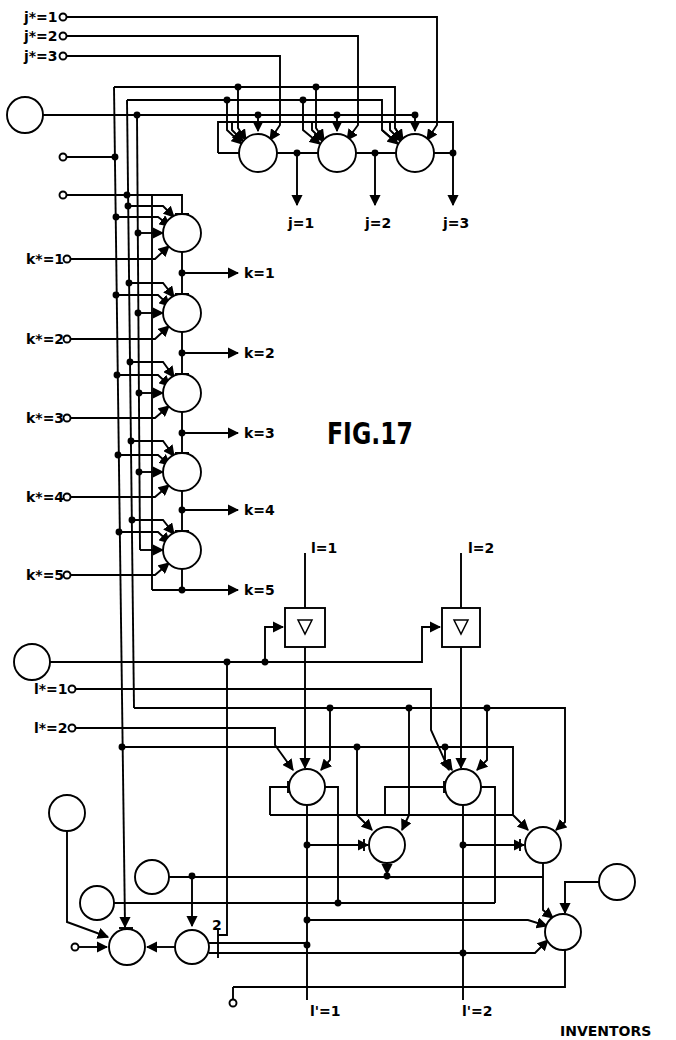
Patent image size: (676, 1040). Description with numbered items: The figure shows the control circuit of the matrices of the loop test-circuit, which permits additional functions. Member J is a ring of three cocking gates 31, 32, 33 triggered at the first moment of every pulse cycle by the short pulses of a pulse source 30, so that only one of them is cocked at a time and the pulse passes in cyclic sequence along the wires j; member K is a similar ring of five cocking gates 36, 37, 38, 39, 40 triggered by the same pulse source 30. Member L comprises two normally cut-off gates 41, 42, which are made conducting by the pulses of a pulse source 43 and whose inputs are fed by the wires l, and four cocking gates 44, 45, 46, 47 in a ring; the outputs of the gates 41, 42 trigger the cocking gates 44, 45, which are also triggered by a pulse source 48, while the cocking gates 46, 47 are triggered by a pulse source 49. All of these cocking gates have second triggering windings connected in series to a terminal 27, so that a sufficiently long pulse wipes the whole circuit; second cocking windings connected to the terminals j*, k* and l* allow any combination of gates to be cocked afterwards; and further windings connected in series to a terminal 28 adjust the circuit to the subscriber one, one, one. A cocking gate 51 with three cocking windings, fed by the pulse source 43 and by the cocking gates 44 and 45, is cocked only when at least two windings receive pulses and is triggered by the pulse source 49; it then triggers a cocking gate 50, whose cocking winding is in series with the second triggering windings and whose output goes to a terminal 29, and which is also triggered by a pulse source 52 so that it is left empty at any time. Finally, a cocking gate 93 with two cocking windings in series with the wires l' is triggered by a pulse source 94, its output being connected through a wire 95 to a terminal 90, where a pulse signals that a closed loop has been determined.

The terminal 27 is at (68, 150).
The terminal 28 is at (70, 188).
The terminal 29 is at (78, 941).
The pulse source 30 is at (40, 102).
The cocking gate 31 is at (245, 172).
The cocking gate 32 is at (325, 172).
The cocking gate 33 is at (403, 172).
The cocking gate 36 is at (199, 240).
The cocking gate 37 is at (199, 320).
The cocking gate 38 is at (199, 400).
The cocking gate 39 is at (199, 479).
The cocking gate 40 is at (199, 557).
The gate 41 is at (325, 625).
The gate 42 is at (480, 625).
The pulse source 43 is at (56, 640).
The cocking gate 44 is at (322, 777).
The cocking gate 45 is at (478, 777).
The cocking gate 46 is at (405, 845).
The cocking gate 47 is at (568, 845).
The pulse source 48 is at (100, 880).
The pulse source 49 is at (160, 861).
The cocking gate 50 is at (141, 965).
The cocking gate 51 is at (204, 962).
The pulse source 52 is at (72, 797).
The terminal 90 is at (235, 1009).
The cocking gate 93 is at (578, 946).
The pulse source 94 is at (605, 898).
The wire 95 is at (406, 986).